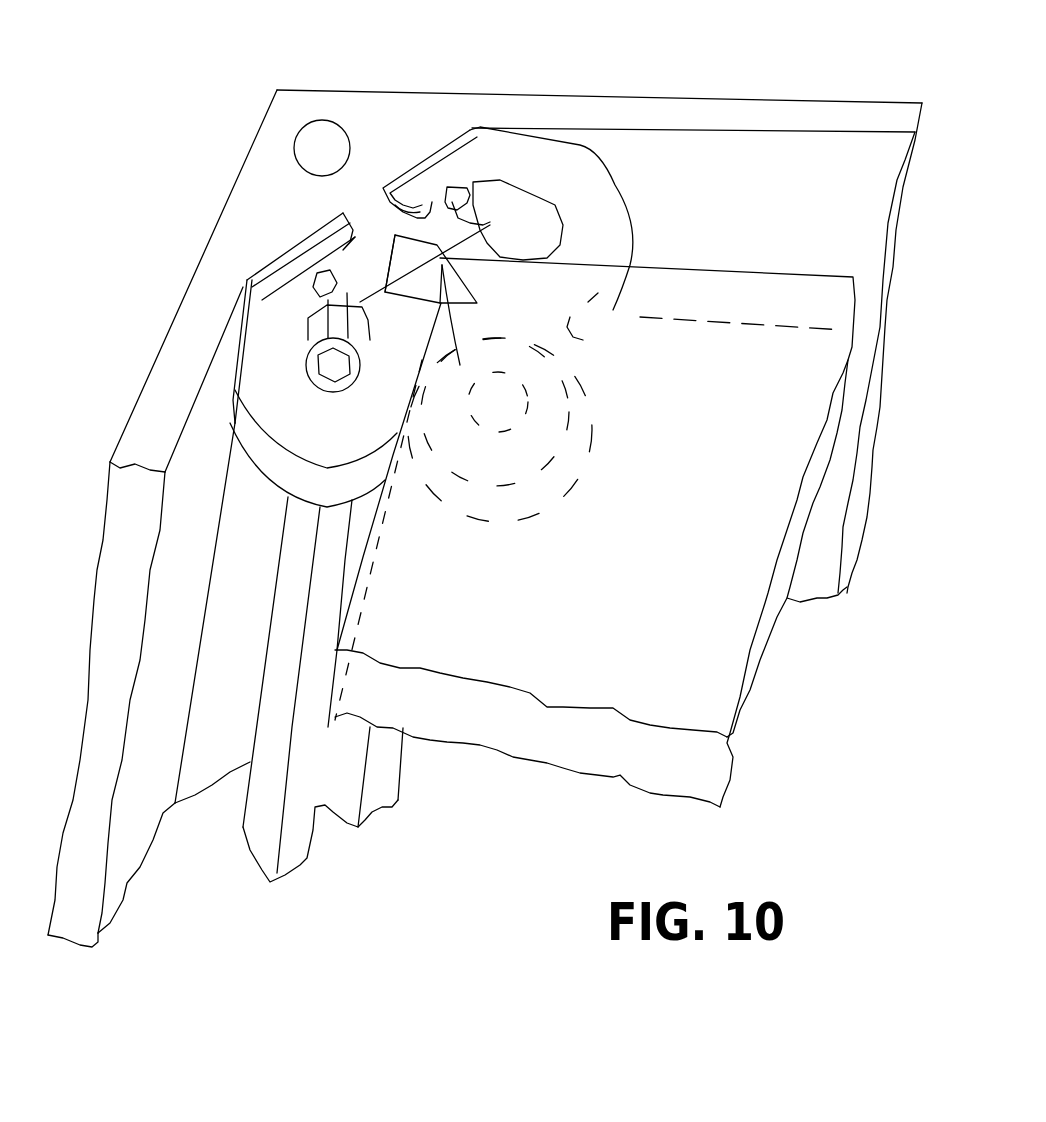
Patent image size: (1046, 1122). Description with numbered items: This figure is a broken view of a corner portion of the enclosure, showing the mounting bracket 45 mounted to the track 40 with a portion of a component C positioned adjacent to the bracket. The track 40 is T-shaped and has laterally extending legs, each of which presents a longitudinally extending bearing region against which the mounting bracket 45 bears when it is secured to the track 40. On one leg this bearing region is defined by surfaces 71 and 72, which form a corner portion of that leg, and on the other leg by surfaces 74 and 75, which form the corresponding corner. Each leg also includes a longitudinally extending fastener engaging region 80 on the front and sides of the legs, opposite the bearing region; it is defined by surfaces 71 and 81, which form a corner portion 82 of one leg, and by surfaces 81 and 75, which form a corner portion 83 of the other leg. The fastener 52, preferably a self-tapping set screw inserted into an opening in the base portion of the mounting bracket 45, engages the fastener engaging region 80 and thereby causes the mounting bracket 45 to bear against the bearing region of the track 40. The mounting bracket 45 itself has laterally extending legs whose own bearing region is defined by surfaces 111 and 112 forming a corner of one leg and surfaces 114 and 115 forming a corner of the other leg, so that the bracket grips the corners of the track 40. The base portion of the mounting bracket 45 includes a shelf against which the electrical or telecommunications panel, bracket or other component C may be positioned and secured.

The track 40 is at (440, 192).
The mounting bracket 45 is at (552, 145).
The fastener 52 is at (310, 370).
The surface 71 is at (480, 190).
The surface 72 is at (436, 206).
The surface 74 is at (333, 267).
The surface 75 is at (315, 285).
The fastener engaging region 80 is at (383, 295).
The surface 81 is at (440, 247).
The corner portion 82 is at (484, 232).
The corner portion 83 is at (350, 330).
The surface 111 is at (560, 223).
The surface 112 is at (416, 207).
The surface 114 is at (345, 170).
The surface 115 is at (330, 242).
The component C is at (375, 630).